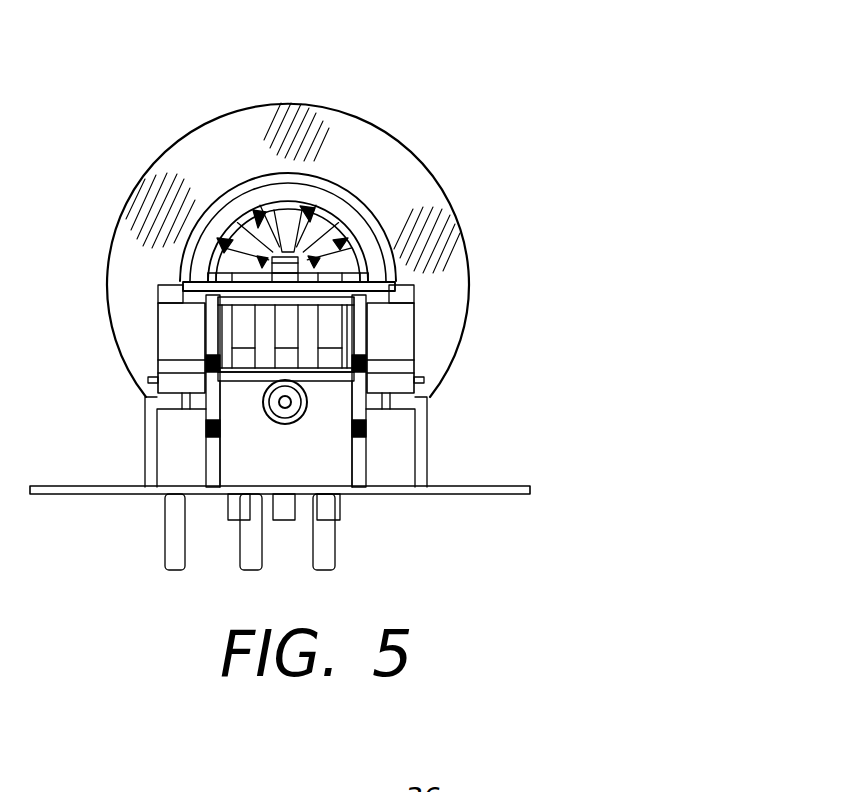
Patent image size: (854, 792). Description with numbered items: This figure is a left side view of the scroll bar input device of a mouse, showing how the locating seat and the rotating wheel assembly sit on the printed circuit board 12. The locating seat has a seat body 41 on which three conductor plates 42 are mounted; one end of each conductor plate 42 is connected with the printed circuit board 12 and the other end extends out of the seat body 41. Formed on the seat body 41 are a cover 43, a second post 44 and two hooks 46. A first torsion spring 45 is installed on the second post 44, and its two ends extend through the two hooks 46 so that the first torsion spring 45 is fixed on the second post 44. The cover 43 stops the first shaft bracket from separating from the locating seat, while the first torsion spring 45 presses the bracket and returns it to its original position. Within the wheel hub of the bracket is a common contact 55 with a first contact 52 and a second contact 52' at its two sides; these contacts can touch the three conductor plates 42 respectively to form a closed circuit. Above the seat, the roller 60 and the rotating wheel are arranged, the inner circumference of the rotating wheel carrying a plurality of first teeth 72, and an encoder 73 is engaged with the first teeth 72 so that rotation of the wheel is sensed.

The printed circuit board 12 is at (470, 496).
The seat body 41 is at (250, 478).
The conductor plates 42 is at (330, 348).
The cover 43 is at (395, 291).
The second post 44 is at (287, 408).
The first torsion spring 45 is at (274, 416).
The hooks 46 is at (210, 418).
The first contact 52 is at (331, 171).
The second contact 52' is at (253, 160).
The common contact 55 is at (292, 252).
The roller 60 is at (432, 221).
The first teeth 72 is at (350, 243).
The encoder 73 is at (360, 238).